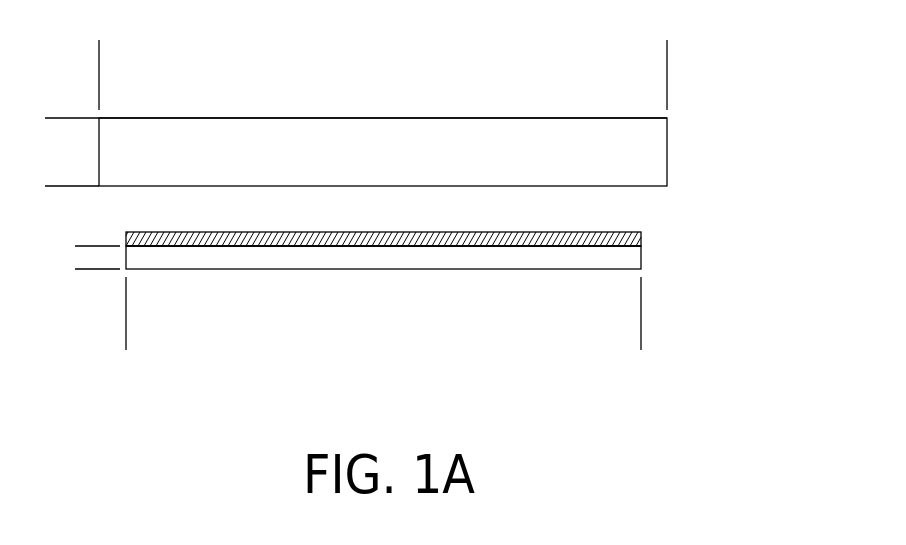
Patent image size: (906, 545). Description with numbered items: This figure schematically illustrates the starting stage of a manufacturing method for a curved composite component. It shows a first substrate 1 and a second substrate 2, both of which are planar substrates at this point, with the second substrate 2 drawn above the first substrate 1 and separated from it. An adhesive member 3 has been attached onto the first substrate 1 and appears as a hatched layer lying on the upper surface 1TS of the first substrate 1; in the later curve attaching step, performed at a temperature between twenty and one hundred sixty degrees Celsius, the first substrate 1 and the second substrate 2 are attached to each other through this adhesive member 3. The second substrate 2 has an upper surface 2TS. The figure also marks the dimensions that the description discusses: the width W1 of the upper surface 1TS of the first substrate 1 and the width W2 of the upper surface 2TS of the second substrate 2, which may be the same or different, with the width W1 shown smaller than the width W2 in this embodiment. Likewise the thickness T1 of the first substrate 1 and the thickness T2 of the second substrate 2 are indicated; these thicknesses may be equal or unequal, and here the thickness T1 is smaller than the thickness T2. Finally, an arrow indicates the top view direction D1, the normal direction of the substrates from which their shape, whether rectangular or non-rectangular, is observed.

The first substrate 1 is at (633, 260).
The second substrate 2 is at (660, 148).
The adhesive member 3 is at (636, 241).
The upper surface of the first substrate 1TS is at (517, 248).
The upper surface of the second substrate 2TS is at (525, 118).
The width of the upper surface of the first substrate W1 is at (641, 343).
The width of the upper surface of the second substrate W2 is at (667, 48).
The thickness of the first substrate T1 is at (82, 212).
The thickness of the second substrate T2 is at (54, 90).
The top view direction D1 is at (766, 108).